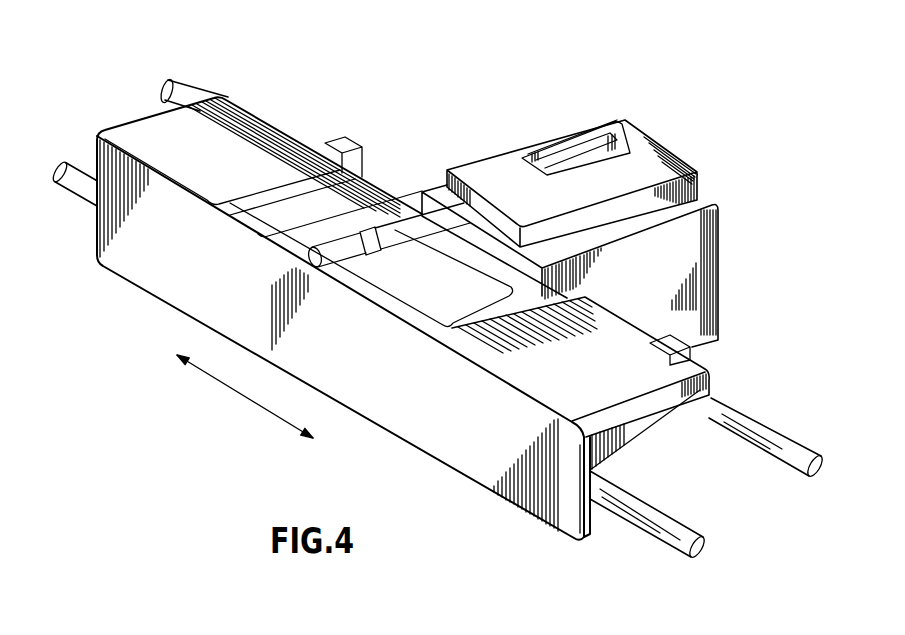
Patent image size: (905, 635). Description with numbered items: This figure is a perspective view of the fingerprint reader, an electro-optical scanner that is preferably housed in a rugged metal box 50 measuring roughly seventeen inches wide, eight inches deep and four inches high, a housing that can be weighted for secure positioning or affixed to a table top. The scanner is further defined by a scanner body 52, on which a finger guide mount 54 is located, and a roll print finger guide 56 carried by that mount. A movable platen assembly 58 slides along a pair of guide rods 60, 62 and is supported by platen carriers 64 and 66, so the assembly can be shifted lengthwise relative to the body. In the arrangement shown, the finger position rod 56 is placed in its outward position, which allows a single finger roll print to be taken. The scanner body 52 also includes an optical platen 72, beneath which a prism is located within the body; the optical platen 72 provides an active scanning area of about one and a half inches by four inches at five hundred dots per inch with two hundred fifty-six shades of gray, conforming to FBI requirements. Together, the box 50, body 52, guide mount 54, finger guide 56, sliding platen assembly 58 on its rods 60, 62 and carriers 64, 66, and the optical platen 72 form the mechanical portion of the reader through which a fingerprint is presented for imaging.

The metal box 50 is at (455, 450).
The scanner body 52 is at (718, 248).
The finger guide mount 54 is at (673, 153).
The roll print finger guide 56 is at (358, 240).
The movable platen assembly 58 is at (287, 126).
The guide rod 60 is at (657, 535).
The guide rod 62 is at (192, 88).
The platen carrier 64 is at (345, 146).
The platen carrier 66 is at (690, 350).
The optical platen 72 is at (410, 307).